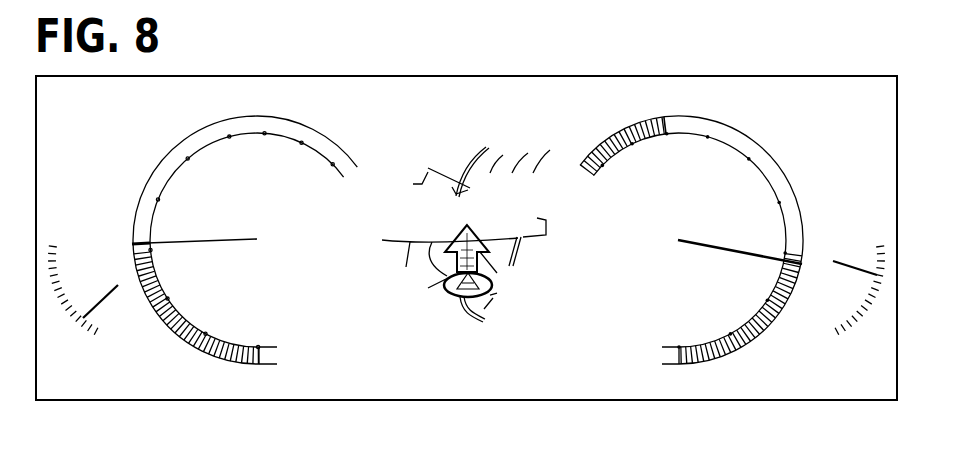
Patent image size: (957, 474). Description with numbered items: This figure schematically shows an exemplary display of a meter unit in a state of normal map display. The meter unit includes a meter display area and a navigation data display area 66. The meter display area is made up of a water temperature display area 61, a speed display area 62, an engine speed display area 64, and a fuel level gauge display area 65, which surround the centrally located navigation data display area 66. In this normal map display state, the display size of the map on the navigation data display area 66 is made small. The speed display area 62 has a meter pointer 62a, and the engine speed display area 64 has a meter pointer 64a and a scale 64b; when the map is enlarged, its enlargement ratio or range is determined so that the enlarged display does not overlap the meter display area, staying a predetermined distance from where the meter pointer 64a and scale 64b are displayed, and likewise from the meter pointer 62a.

The water temperature display area 61 is at (83, 318).
The speed display area 62 is at (244, 285).
The meter pointer 62a is at (195, 243).
The engine speed display area 64 is at (691, 285).
The meter pointer 64a is at (720, 250).
The scale 64b is at (763, 332).
The fuel level gauge display area 65 is at (847, 327).
The navigation data display area 66 is at (492, 117).